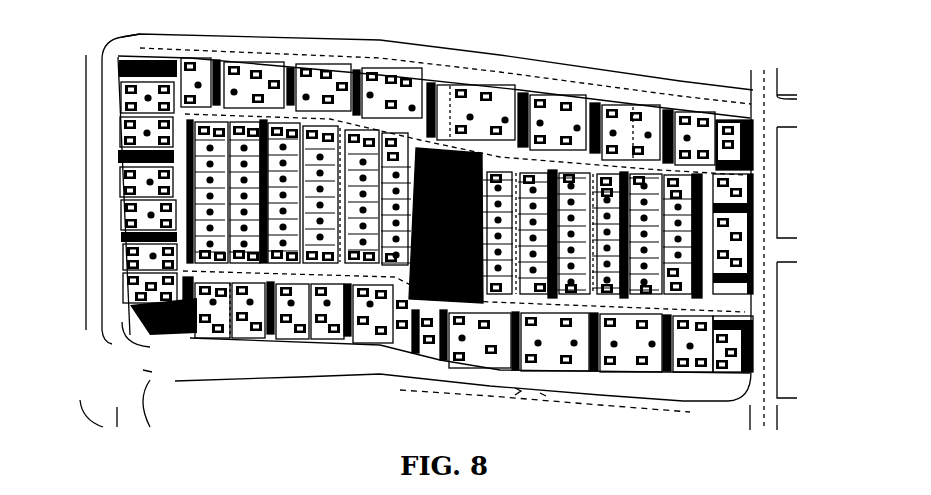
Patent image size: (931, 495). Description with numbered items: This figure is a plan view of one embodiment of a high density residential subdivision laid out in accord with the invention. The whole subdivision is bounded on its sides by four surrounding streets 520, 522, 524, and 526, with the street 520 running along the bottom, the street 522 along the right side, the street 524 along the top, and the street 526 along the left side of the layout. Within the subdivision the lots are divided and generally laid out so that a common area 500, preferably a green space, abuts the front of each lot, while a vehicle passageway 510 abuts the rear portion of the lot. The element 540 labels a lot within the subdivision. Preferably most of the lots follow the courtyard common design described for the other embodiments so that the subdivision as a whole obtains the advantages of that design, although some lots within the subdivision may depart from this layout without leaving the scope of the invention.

The common area 500 is at (596, 108).
The vehicle passageway 510 is at (635, 110).
The street 520 is at (490, 380).
The street 522 is at (770, 213).
The street 524 is at (443, 64).
The street 526 is at (85, 193).
The residential lot with structure 540 is at (618, 132).